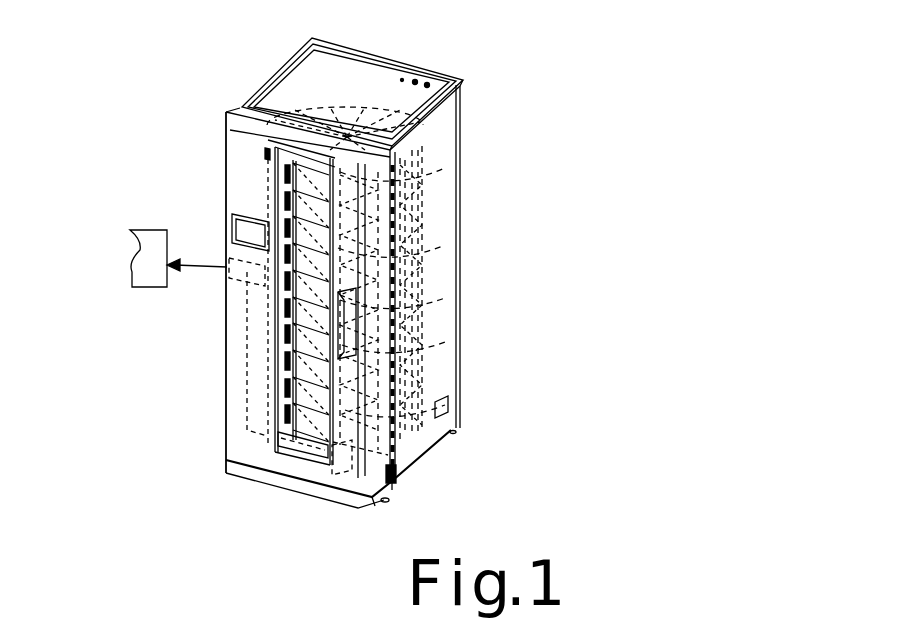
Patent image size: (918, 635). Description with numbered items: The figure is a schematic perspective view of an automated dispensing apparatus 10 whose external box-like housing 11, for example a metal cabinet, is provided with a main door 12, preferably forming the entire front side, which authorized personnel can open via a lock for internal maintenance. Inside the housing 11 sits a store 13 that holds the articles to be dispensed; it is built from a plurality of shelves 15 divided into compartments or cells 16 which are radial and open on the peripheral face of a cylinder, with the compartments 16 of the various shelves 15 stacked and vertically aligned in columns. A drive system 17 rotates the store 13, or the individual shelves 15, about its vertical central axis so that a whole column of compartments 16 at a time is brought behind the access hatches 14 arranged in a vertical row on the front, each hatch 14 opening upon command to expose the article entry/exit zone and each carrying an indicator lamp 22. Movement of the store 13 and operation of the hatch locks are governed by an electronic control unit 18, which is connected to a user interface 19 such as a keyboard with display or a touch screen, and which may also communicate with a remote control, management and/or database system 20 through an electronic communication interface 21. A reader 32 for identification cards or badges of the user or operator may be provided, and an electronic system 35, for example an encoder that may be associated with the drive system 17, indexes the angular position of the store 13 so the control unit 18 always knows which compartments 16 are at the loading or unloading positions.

The automated dispensing apparatus 10 is at (505, 112).
The external box-like housing 11 is at (392, 63).
The main door 12 is at (230, 398).
The store 13 is at (311, 104).
The access hatches 14 is at (302, 432).
The shelves 15 is at (440, 310).
The compartments or cells 16 is at (421, 245).
The drive system 17 is at (347, 447).
The electronic control unit 18 is at (228, 282).
The user interface 19 is at (240, 233).
The remote control, management and/or database system 20 is at (140, 265).
The electronic communication interface 21 is at (190, 272).
The indicator lamp 22 is at (288, 195).
The reader 32 is at (358, 316).
The electronic system for indexing angular position 35 is at (347, 465).